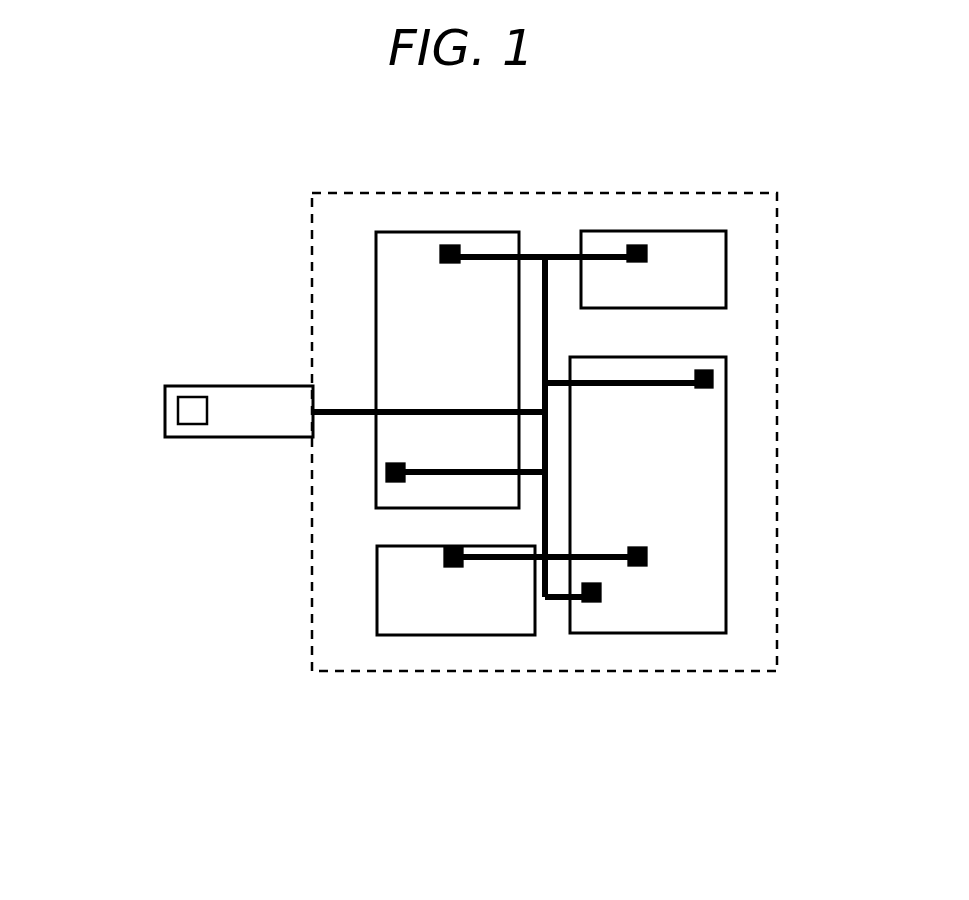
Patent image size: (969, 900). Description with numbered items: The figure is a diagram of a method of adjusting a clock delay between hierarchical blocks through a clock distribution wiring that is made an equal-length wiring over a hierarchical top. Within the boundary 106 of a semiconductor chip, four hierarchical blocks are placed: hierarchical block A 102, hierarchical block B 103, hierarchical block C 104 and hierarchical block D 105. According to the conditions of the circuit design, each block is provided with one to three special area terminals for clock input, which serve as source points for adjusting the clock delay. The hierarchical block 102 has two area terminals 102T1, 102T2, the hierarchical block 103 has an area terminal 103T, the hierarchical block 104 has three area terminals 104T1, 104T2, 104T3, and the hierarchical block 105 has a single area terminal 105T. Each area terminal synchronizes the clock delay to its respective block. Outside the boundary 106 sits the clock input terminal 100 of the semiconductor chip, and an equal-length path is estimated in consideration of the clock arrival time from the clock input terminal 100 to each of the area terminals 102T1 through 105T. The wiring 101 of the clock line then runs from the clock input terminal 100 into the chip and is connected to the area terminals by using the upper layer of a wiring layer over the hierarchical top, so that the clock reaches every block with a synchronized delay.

The clock input terminal 100 is at (178, 386).
The wiring of a clock line 101 is at (350, 408).
The hierarchical block A 102 is at (386, 232).
The hierarchical block B 103 is at (630, 231).
The hierarchical block C 104 is at (713, 357).
The hierarchical block D 105 is at (530, 636).
The boundary of a semiconductor chip 106 is at (350, 673).
The area terminal 102T1 is at (394, 463).
The area terminal 102T2 is at (447, 263).
The area terminal 103T is at (635, 262).
The area terminal 104T1 is at (594, 602).
The area terminal 104T2 is at (633, 547).
The area terminal 104T3 is at (705, 388).
The area terminal 105T is at (445, 567).